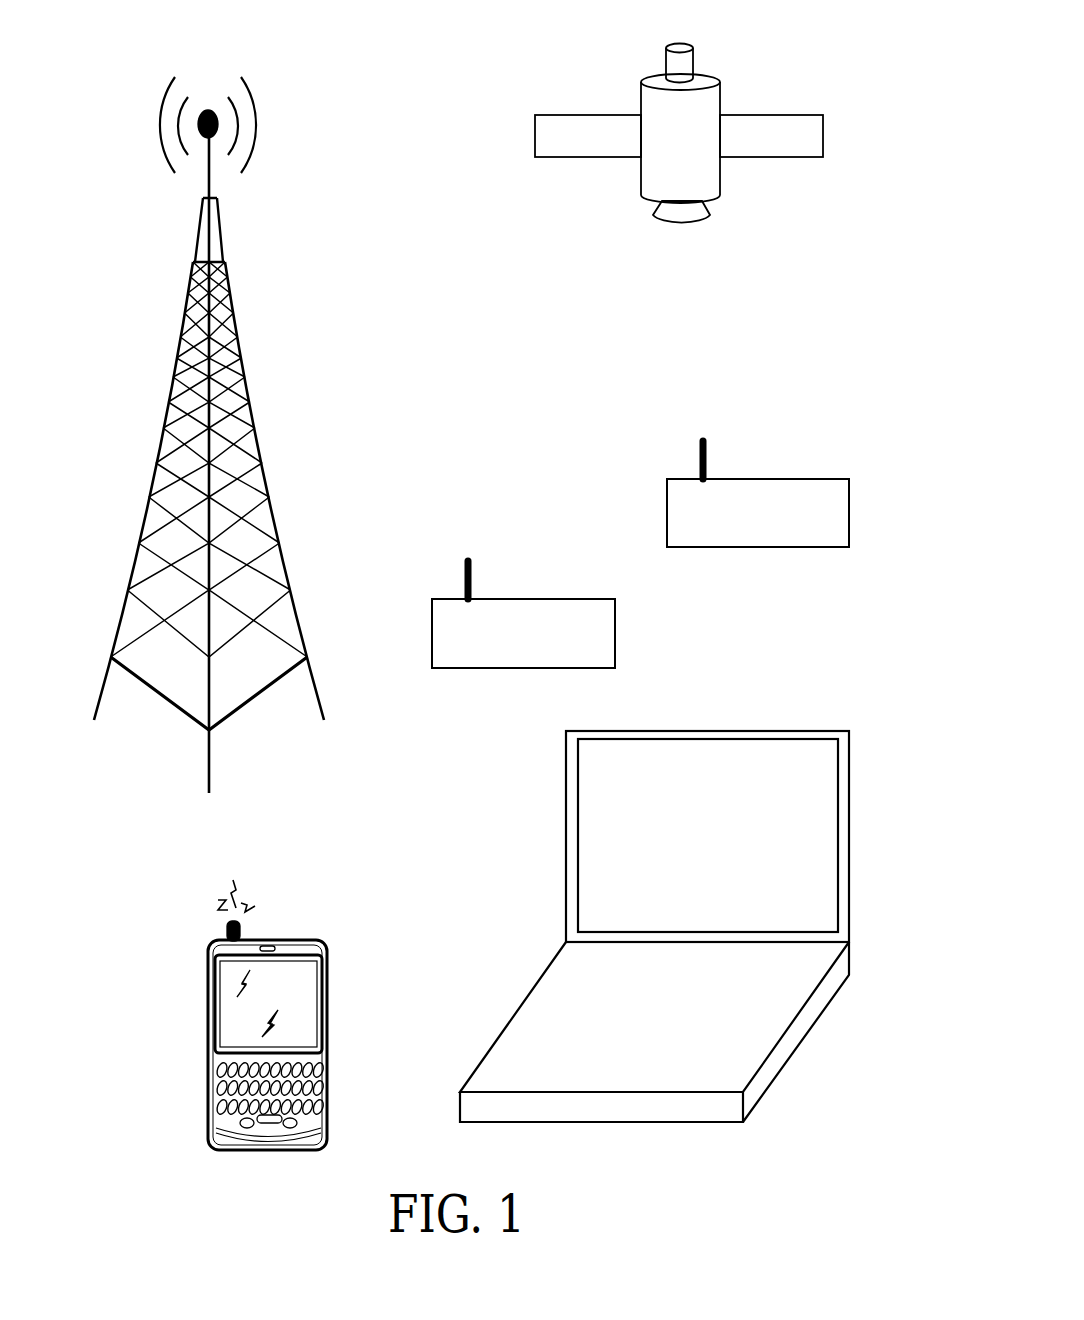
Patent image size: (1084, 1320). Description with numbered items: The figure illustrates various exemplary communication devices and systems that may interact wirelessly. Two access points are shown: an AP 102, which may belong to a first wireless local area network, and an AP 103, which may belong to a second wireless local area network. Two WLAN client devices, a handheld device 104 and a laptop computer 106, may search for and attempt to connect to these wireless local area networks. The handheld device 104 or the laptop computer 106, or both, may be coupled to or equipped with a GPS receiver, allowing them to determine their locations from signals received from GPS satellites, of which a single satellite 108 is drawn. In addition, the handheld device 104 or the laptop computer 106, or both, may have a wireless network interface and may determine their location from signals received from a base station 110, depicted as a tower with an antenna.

The base station 110 is at (231, 313).
The satellite 108 is at (637, 174).
The AP 103 is at (800, 527).
The AP 102 is at (564, 648).
The laptop computer 106 is at (537, 980).
The handheld device 104 is at (202, 1072).